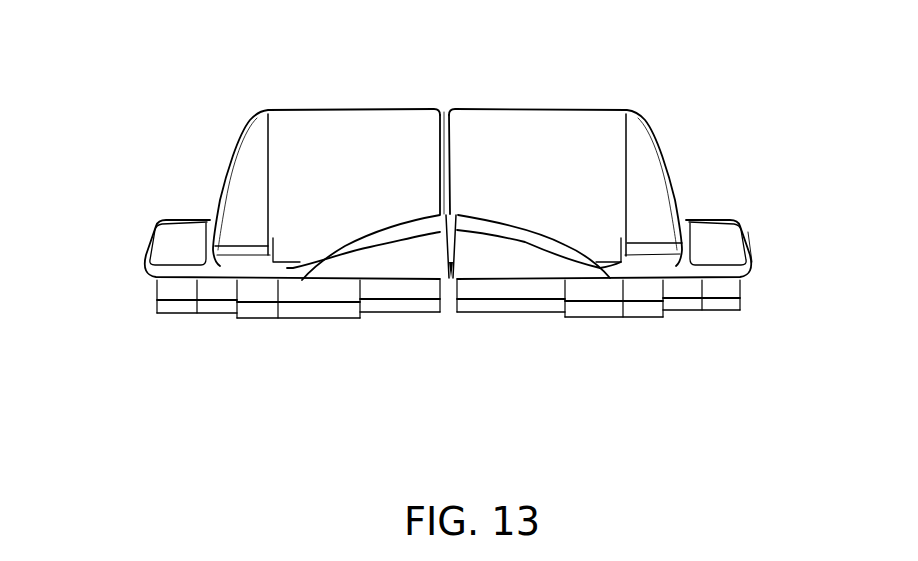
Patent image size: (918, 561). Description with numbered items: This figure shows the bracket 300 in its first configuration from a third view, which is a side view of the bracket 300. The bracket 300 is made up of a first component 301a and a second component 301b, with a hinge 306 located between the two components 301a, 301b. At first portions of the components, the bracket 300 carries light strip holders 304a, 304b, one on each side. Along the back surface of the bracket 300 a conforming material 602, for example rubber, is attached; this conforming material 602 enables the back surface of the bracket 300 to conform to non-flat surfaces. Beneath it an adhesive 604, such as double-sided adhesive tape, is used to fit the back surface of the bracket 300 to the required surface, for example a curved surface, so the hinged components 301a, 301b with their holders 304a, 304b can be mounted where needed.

The bracket 300 is at (224, 56).
The first component 301a is at (326, 88).
The second component 301b is at (574, 88).
The light strip holder 304a is at (186, 198).
The light strip holder 304b is at (722, 201).
The hinge 306 is at (448, 335).
The conforming material 602 is at (157, 293).
The adhesive 604 is at (178, 318).